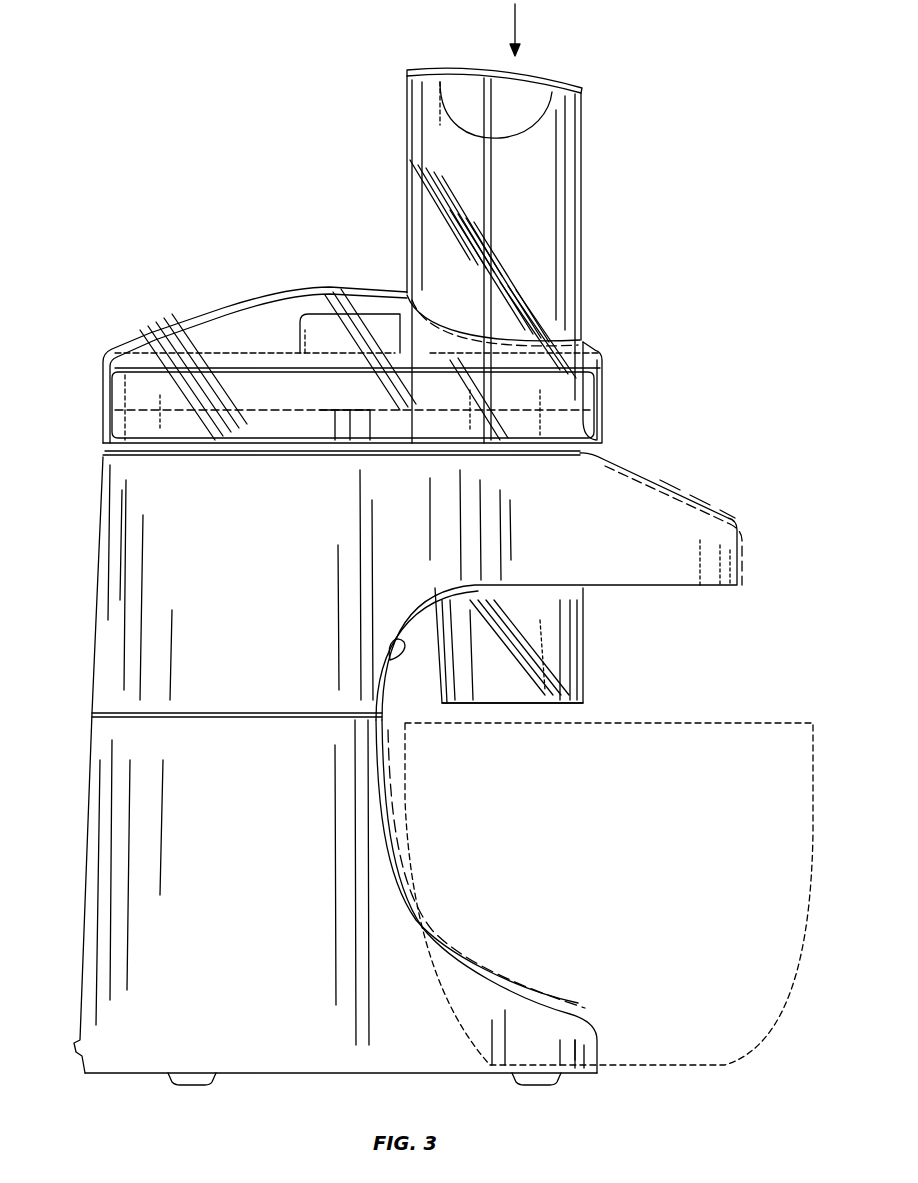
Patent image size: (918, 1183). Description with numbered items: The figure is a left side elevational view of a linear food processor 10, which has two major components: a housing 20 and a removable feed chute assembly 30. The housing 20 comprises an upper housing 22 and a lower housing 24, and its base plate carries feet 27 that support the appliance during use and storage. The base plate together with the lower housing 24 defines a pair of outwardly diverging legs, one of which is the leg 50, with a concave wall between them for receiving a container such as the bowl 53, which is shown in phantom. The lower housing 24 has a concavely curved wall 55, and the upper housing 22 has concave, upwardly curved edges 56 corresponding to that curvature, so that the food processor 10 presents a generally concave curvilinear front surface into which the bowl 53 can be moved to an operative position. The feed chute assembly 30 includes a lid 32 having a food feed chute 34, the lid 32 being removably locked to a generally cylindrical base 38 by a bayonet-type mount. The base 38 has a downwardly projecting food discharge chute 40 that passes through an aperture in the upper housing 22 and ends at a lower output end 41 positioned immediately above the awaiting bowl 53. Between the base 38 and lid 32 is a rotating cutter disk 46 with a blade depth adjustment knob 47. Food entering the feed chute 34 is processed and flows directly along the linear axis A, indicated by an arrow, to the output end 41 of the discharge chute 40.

The linear food processor 10 is at (662, 347).
The axis A is at (518, 36).
The housing 20 is at (85, 544).
The upper housing 22 is at (93, 617).
The lower housing 24 is at (148, 920).
The feet 27 is at (205, 1080).
The removable feed chute assembly 30 is at (184, 294).
The lid 32 is at (264, 292).
The food feed chute 34 is at (582, 220).
The base 38 is at (606, 422).
The food discharge chute 40 is at (588, 660).
The lower output end 41 is at (575, 718).
The rotating cutter disk 46 is at (140, 385).
The blade depth adjustment knob 47 is at (312, 343).
The leg 50 is at (580, 1065).
The bowl 53 is at (740, 720).
The concavely curved wall 55 is at (398, 862).
The curved edges 56 is at (390, 655).